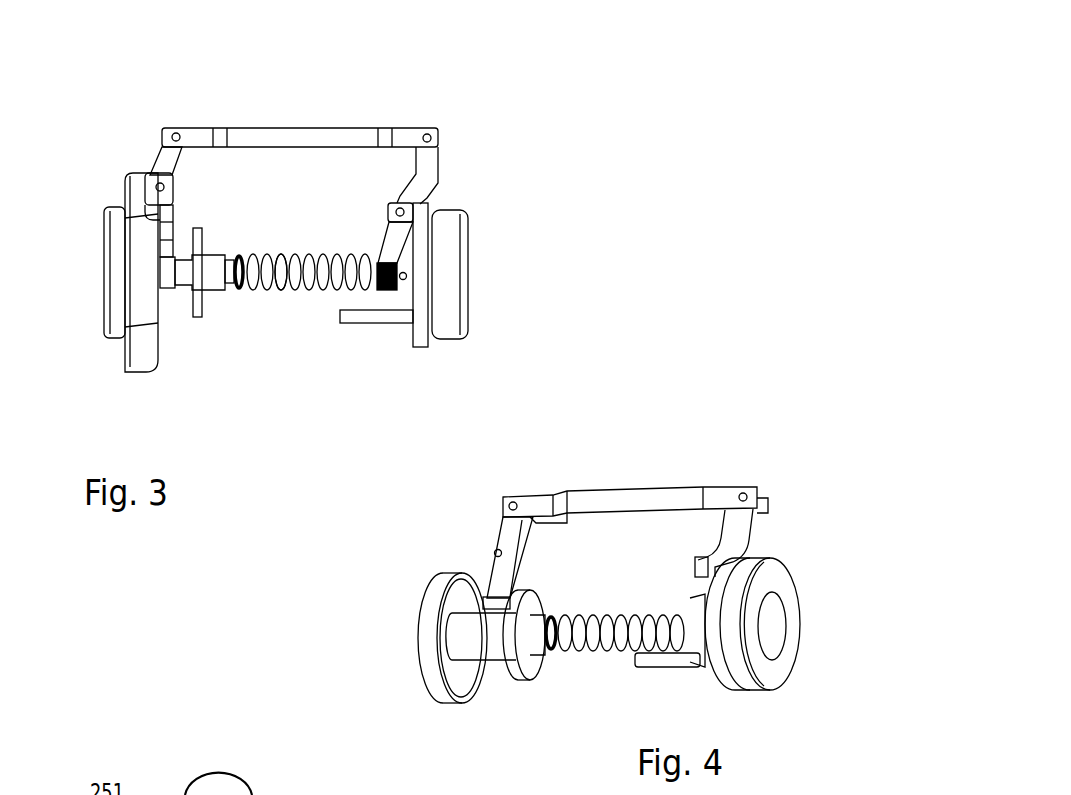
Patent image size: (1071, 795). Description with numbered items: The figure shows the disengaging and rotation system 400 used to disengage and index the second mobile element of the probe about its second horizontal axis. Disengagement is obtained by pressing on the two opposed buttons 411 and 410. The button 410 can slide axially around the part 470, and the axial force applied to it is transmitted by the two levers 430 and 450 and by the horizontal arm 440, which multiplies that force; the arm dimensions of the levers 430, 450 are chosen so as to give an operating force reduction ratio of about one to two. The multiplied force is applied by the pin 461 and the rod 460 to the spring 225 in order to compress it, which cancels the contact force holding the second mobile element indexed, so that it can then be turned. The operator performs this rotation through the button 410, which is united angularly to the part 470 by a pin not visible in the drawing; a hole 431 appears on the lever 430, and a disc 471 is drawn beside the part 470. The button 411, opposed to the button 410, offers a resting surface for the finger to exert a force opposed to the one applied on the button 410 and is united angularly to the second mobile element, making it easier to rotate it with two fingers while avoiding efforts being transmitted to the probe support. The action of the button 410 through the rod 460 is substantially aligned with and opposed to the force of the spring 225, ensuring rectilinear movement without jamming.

In FIG. 3, the disengaging and rotation system 400 is at (398, 92).
In FIG. 4, the disengaging and rotation system 400 is at (688, 452).
In FIG. 3, the horizontal arm 440 is at (306, 140).
In FIG. 4, the horizontal arm 440 is at (625, 505).
In FIG. 3, the lever 430 is at (168, 164).
In FIG. 4, the lever 430 is at (505, 537).
In FIG. 4, the pivot hole 431 is at (492, 550).
In FIG. 3, the button 410 is at (105, 338).
In FIG. 4, the button 410 is at (432, 677).
In FIG. 3, the button 411 is at (452, 242).
In FIG. 4, the button 411 is at (778, 667).
In FIG. 3, the lever 450 is at (428, 170).
In FIG. 4, the lever 450 is at (744, 528).
In FIG. 3, the rod 460 is at (304, 292).
In FIG. 4, the rod 460 is at (586, 680).
In FIG. 3, the pin 461 is at (403, 281).
In FIG. 3, the part 470 is at (214, 283).
In FIG. 3, the disc 471 is at (196, 318).
In FIG. 4, the disc 471 is at (515, 681).
In FIG. 3, the spring 225 is at (281, 256).